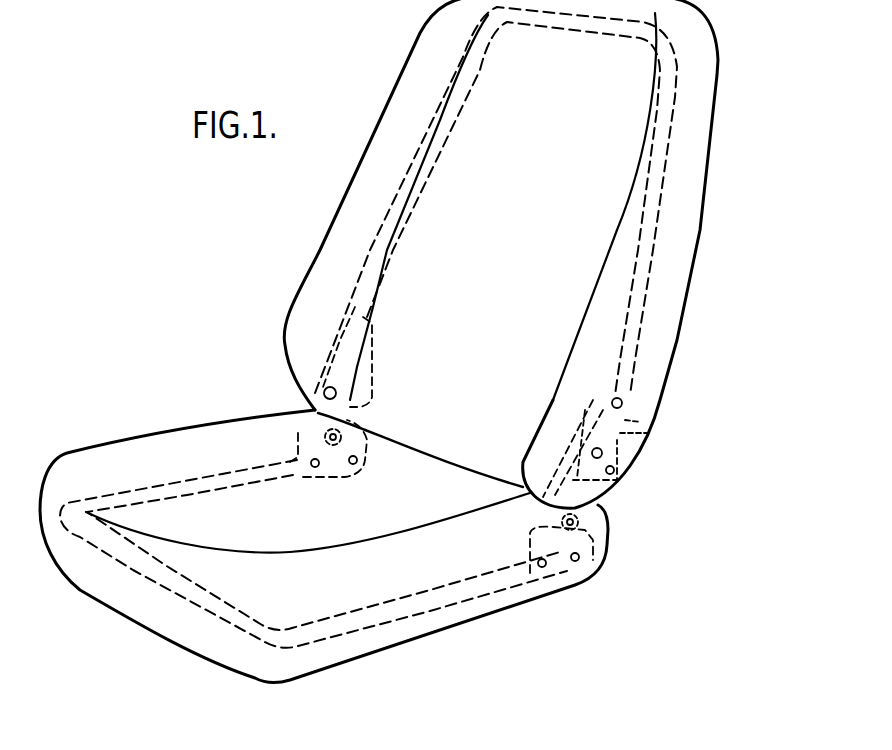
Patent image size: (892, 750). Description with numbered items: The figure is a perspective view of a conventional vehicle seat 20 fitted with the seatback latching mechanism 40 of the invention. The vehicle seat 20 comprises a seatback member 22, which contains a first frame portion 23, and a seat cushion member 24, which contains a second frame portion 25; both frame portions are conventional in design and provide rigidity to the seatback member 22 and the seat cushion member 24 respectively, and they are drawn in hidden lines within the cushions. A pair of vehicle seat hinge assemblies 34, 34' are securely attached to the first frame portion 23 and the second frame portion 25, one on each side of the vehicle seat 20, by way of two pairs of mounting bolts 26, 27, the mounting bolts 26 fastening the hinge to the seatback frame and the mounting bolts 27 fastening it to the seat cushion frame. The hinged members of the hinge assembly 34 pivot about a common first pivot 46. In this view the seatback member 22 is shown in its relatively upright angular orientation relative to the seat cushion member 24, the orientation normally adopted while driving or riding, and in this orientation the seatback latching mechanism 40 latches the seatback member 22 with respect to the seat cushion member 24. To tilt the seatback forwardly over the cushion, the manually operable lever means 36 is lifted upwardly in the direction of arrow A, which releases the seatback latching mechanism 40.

The vehicle seat 20 is at (262, 256).
The seatback member 22 is at (712, 143).
The first frame portion 23 is at (657, 210).
The seat cushion member 24 is at (145, 438).
The second frame portion 25 is at (183, 580).
The mounting bolts 26 is at (372, 322).
The mounting bolts 27 is at (575, 562).
The vehicle seat hinge assembly 34 is at (546, 445).
The vehicle seat hinge assembly 34' is at (383, 357).
The manually operable lever means 36 is at (648, 434).
The seatback latching mechanism 40 is at (565, 492).
The common first pivot 46 is at (595, 533).
The arrow A is at (637, 427).